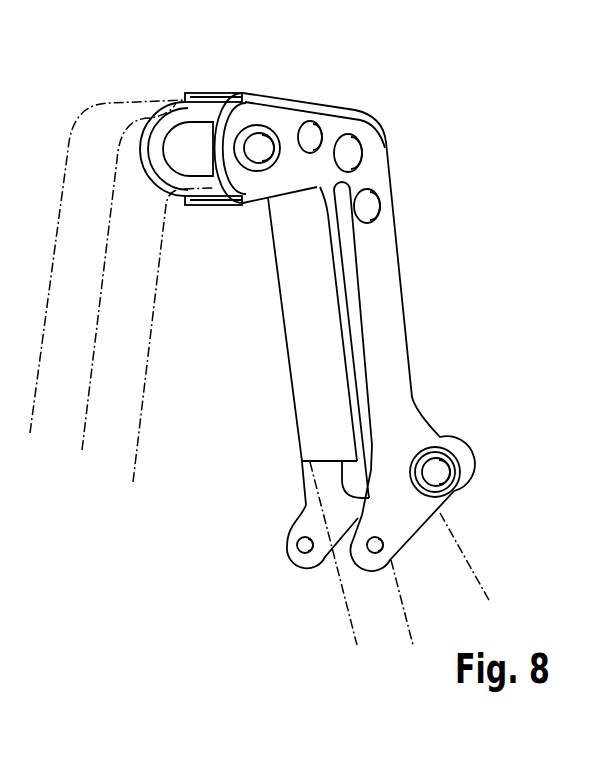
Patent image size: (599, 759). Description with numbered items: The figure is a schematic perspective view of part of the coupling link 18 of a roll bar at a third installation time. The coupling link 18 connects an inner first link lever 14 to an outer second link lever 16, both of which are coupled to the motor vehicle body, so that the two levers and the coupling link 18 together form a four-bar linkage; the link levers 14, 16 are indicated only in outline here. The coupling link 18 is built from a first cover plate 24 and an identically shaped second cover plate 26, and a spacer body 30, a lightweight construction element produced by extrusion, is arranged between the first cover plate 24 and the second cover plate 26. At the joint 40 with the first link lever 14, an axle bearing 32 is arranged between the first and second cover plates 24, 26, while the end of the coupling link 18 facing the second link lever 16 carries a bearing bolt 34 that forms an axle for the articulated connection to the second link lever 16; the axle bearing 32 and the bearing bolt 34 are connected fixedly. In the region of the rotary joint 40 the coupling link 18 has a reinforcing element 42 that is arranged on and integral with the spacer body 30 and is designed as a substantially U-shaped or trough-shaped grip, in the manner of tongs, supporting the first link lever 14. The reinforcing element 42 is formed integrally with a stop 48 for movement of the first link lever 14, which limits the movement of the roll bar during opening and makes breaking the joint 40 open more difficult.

The inner first link lever 14 is at (80, 148).
The outer second link lever 16 is at (360, 605).
The coupling link 18 is at (317, 289).
The first cover plate 24 is at (385, 313).
The second cover plate 26 is at (330, 477).
The spacer body 30 is at (303, 318).
The axle bearing 32 is at (256, 145).
The bearing bolt 34 is at (437, 477).
The joint 40 is at (160, 77).
The reinforcing element 42 is at (213, 207).
The stop 48 is at (205, 93).